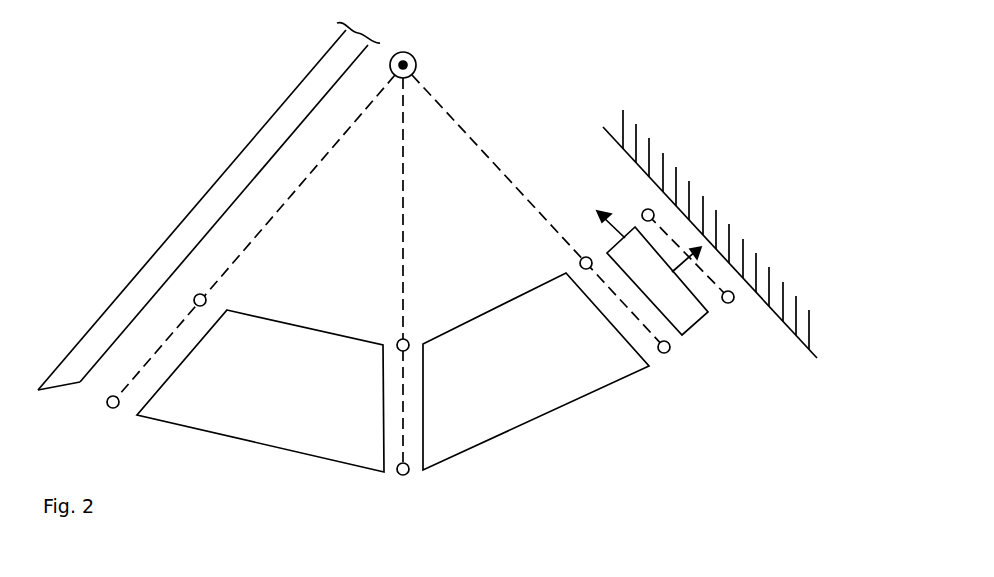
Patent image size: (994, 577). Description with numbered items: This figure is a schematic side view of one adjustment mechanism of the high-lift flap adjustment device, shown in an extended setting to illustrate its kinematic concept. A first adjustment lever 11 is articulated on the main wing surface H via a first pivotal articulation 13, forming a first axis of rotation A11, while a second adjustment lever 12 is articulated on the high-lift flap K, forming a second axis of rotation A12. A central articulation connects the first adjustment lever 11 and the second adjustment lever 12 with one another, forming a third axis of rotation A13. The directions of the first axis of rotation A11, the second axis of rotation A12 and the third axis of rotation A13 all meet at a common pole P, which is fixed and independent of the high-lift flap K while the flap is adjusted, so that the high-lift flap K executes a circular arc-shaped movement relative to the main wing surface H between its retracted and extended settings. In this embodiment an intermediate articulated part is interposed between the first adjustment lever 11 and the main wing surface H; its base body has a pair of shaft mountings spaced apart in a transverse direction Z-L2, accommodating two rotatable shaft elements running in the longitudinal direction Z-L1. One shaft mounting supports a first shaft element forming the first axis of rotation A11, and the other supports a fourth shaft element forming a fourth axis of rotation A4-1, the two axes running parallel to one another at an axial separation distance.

The common pole P is at (406, 52).
The high-lift flap K is at (217, 187).
The main wing surface H is at (683, 181).
The second axis of rotation A12 is at (168, 342).
The third axis of rotation A13 is at (404, 377).
The first axis of rotation A11 is at (608, 283).
The fourth axis of rotation A4-1 is at (677, 241).
The longitudinal direction of the base body Z-L1 is at (613, 227).
The transverse direction of the base body Z-L2 is at (676, 277).
The first adjustment lever 11 is at (543, 403).
The second adjustment lever 12 is at (253, 424).
The first pivotal articulation 13 is at (391, 483).